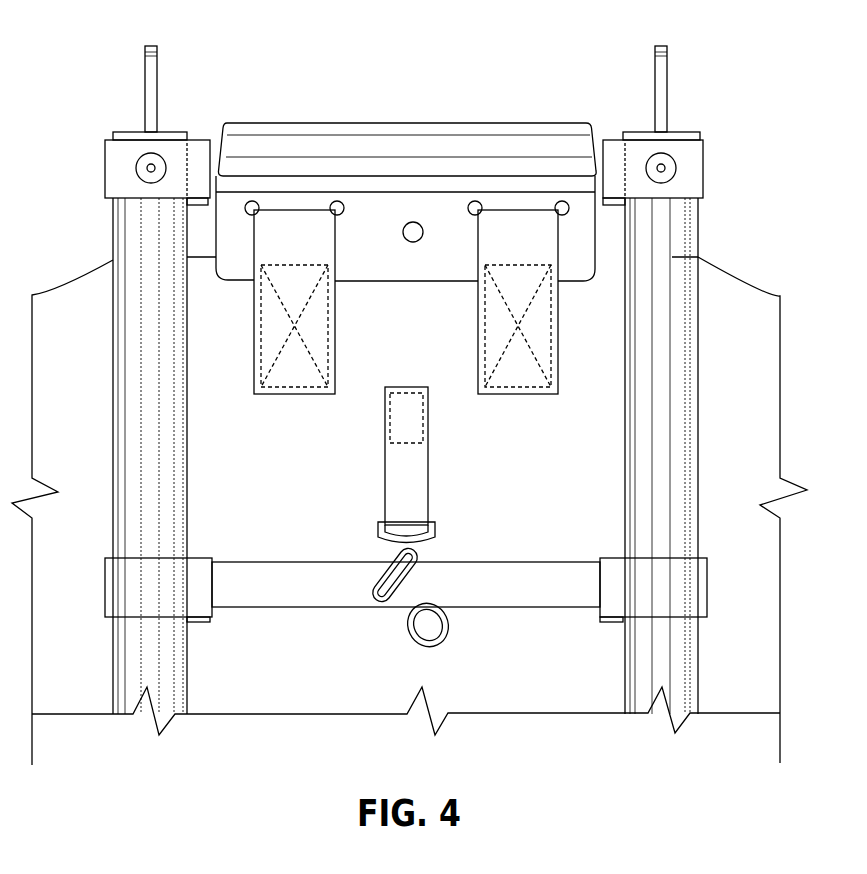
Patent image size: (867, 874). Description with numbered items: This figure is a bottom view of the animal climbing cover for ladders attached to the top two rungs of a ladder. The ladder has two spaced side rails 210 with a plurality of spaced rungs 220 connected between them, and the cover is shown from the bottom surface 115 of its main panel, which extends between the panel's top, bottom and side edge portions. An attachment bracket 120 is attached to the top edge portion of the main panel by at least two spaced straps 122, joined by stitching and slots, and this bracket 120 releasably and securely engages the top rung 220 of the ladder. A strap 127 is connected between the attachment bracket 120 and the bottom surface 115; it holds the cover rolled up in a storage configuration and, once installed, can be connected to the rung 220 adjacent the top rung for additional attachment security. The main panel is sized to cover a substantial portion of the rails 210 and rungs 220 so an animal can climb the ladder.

The bottom surface 115 is at (577, 703).
The attachment bracket 120 is at (515, 135).
The spaced straps 122 is at (300, 393).
The strap 127 is at (422, 468).
The side rails 210 is at (123, 406).
The rungs 220 is at (218, 147).